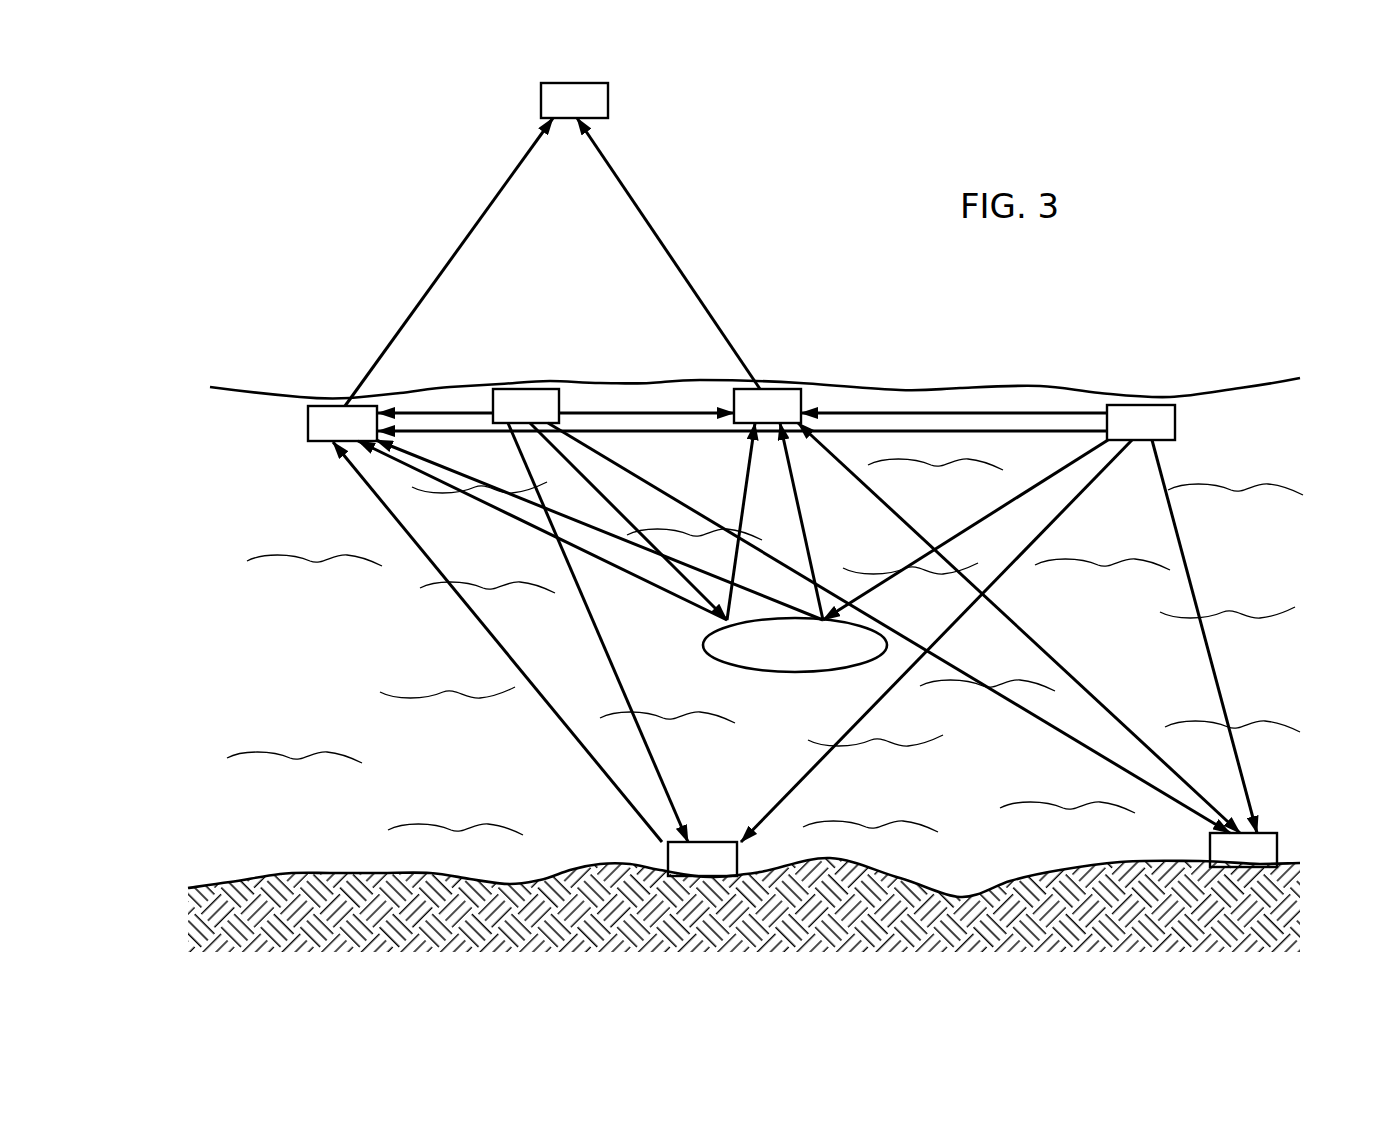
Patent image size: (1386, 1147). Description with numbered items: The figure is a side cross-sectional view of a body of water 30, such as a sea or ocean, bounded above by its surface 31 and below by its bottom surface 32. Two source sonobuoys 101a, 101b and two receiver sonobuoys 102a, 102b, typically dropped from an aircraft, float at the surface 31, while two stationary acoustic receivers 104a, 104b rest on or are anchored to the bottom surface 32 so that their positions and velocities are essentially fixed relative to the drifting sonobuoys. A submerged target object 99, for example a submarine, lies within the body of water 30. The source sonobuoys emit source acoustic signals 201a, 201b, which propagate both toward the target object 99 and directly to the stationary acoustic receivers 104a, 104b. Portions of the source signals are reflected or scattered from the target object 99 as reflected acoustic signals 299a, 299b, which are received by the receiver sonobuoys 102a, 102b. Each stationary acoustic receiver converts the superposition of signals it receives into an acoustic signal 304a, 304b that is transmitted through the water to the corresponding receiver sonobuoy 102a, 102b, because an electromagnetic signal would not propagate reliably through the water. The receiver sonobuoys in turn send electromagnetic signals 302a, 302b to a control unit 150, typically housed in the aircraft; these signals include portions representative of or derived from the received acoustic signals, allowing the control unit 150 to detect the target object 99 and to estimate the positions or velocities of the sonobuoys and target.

The control unit 150 is at (596, 114).
The receiver sonobuoy 102a is at (318, 437).
The source sonobuoy 101a is at (502, 420).
The receiver sonobuoy 102b is at (743, 419).
The source sonobuoy 101b is at (1117, 436).
The stationary acoustic receiver 104a is at (677, 872).
The stationary acoustic receiver 104b is at (1219, 863).
The target object 99 is at (780, 659).
The electromagnetic signal 302a is at (432, 286).
The electromagnetic signal 302b is at (690, 282).
The source acoustic signal 201a is at (590, 557).
The source acoustic signal 201b is at (1172, 524).
The reflected or scattered acoustic signal 299a is at (590, 557).
The reflected or scattered acoustic signal 299b is at (760, 594).
The acoustic signal 304a is at (487, 630).
The acoustic signal 304b is at (1097, 693).
The body of water 30 is at (288, 671).
The surface 31 is at (1203, 392).
The bottom surface 32 is at (1114, 860).